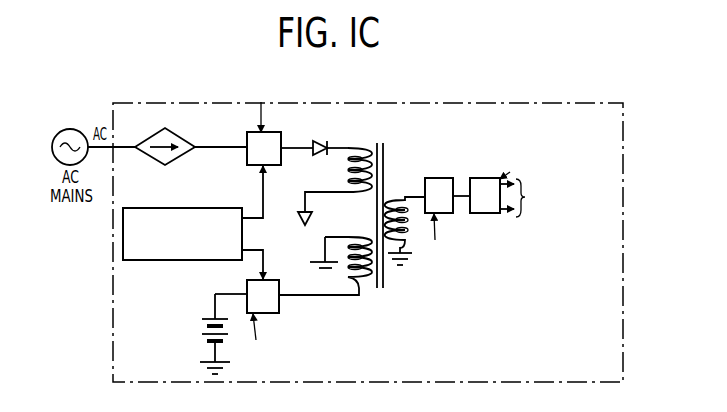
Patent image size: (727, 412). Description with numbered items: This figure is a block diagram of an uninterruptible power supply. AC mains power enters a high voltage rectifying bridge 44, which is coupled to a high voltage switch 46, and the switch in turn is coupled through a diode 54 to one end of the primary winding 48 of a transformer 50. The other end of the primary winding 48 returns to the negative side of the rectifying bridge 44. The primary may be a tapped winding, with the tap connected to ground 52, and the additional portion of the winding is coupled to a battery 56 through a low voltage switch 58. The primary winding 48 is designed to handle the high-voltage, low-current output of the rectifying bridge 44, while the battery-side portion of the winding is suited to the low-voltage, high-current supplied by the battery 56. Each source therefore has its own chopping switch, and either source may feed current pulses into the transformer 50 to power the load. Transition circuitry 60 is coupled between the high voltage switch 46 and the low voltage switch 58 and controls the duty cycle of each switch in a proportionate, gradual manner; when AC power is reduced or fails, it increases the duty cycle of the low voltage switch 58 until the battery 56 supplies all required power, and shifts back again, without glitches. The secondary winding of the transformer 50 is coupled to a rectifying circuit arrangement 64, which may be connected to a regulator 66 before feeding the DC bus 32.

The DC bus 32 is at (592, 181).
The high voltage rectifying bridge 44 is at (178, 134).
The high voltage switch 46 is at (276, 132).
The primary winding 48 is at (362, 177).
The transformer 50 is at (381, 143).
The ground 52 is at (312, 266).
The diode 54 is at (326, 142).
The battery 56 is at (202, 330).
The low voltage switch 58 is at (278, 313).
The transition circuitry 60 is at (178, 208).
The rectifying circuit arrangement 64 is at (437, 178).
The regulator 66 is at (482, 178).